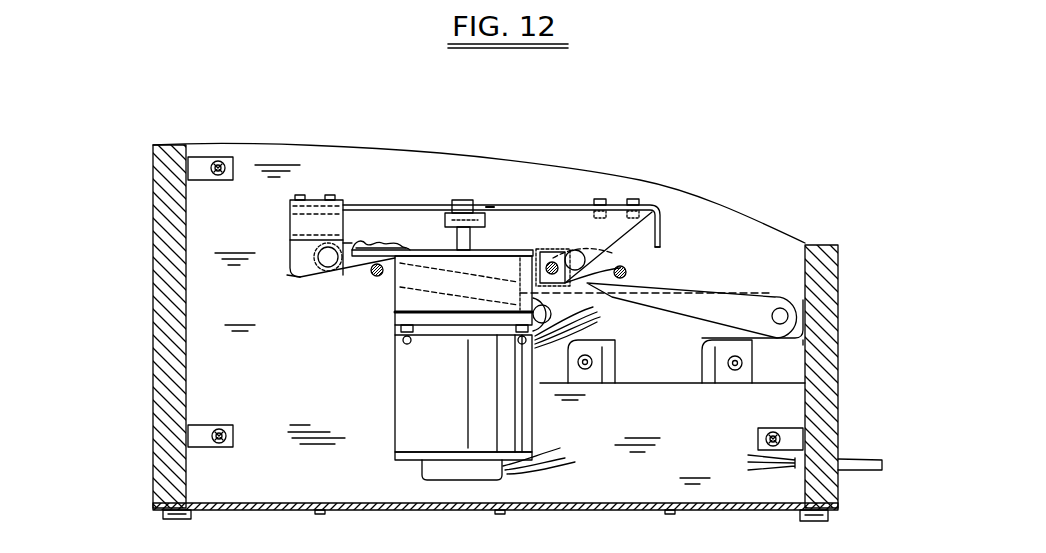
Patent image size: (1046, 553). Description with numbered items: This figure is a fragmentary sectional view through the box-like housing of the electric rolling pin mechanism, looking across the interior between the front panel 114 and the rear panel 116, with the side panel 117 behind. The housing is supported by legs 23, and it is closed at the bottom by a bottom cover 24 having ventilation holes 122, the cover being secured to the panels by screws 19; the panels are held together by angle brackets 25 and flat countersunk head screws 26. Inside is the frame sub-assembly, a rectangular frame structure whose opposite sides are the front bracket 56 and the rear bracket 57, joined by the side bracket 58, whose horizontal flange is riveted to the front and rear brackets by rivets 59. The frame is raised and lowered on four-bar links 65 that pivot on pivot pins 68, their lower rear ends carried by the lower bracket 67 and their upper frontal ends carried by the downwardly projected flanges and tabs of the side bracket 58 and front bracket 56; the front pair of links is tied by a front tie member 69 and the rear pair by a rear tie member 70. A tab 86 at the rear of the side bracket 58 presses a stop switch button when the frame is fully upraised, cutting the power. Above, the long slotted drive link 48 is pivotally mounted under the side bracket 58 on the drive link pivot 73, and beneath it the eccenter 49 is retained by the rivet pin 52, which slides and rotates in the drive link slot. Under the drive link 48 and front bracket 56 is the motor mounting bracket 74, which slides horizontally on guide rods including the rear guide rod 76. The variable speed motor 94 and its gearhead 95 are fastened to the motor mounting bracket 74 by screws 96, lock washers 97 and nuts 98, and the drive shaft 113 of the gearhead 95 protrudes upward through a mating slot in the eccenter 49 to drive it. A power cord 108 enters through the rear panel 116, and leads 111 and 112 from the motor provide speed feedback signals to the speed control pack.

The screws 19 is at (733, 363).
The legs 23 is at (163, 513).
The bottom cover 24 is at (277, 503).
The angle brackets 25 is at (203, 163).
The flat countersunk head screws 26 is at (224, 164).
The drive link 48 is at (437, 236).
The eccenter 49 is at (496, 211).
The rivet pin 52 is at (474, 211).
The front bracket 56 is at (290, 222).
The rear bracket 57 is at (640, 207).
The side bracket 58 is at (575, 205).
The rivets 59 is at (330, 199).
The four-bar links 65 is at (352, 277).
The lower bracket 67 is at (657, 372).
The pivot pins 68 is at (325, 262).
The front tie member 69 is at (368, 280).
The rear tie member 70 is at (628, 270).
The drive link pivot 73 is at (462, 203).
The motor mounting bracket 74 is at (553, 258).
The rear guide rod 76 is at (415, 276).
The tab 86 is at (661, 231).
The variable speed motor 94 is at (395, 406).
The gearhead 95 is at (397, 300).
The screws 96 is at (422, 256).
The lock washers 97 is at (516, 330).
The nuts 98 is at (521, 343).
The power cord 108 is at (870, 460).
The lead 111 is at (543, 458).
The lead 112 is at (540, 470).
The drive shaft 113 is at (457, 236).
The front panel 114 is at (165, 243).
The rear panel 116 is at (832, 372).
The side panel 117 is at (205, 328).
The ventilation holes 122 is at (500, 512).